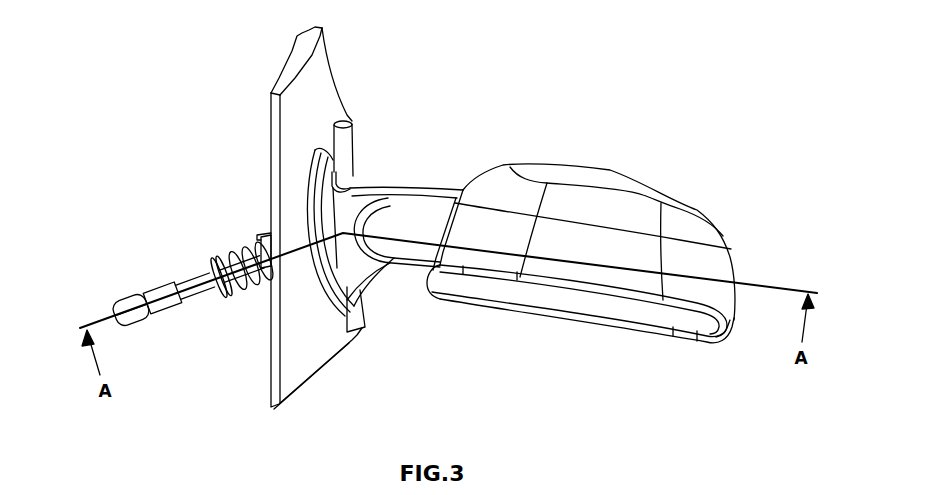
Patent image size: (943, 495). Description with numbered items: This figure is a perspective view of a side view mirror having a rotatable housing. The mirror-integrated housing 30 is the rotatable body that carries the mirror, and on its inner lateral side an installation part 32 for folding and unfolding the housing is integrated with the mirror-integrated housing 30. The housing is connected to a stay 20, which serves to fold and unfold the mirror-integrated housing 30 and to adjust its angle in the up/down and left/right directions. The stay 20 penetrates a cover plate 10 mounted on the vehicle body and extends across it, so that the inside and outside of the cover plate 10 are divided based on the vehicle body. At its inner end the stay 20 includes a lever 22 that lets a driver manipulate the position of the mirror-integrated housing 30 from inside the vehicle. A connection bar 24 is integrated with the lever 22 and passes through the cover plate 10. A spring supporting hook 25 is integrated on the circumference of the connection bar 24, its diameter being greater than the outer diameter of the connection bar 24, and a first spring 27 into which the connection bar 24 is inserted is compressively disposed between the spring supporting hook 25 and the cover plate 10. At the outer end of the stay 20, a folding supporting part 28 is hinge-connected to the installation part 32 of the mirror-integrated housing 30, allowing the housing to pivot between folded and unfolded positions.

The cover plate 10 is at (317, 358).
The stay 20 is at (180, 281).
The lever 22 is at (122, 298).
The connection bar 24 is at (202, 291).
The spring supporting hook 25 is at (221, 257).
The first spring 27 is at (250, 249).
The folding supporting part 28 is at (349, 178).
The mirror-integrated housing 30 is at (568, 328).
The installation part 32 is at (417, 210).